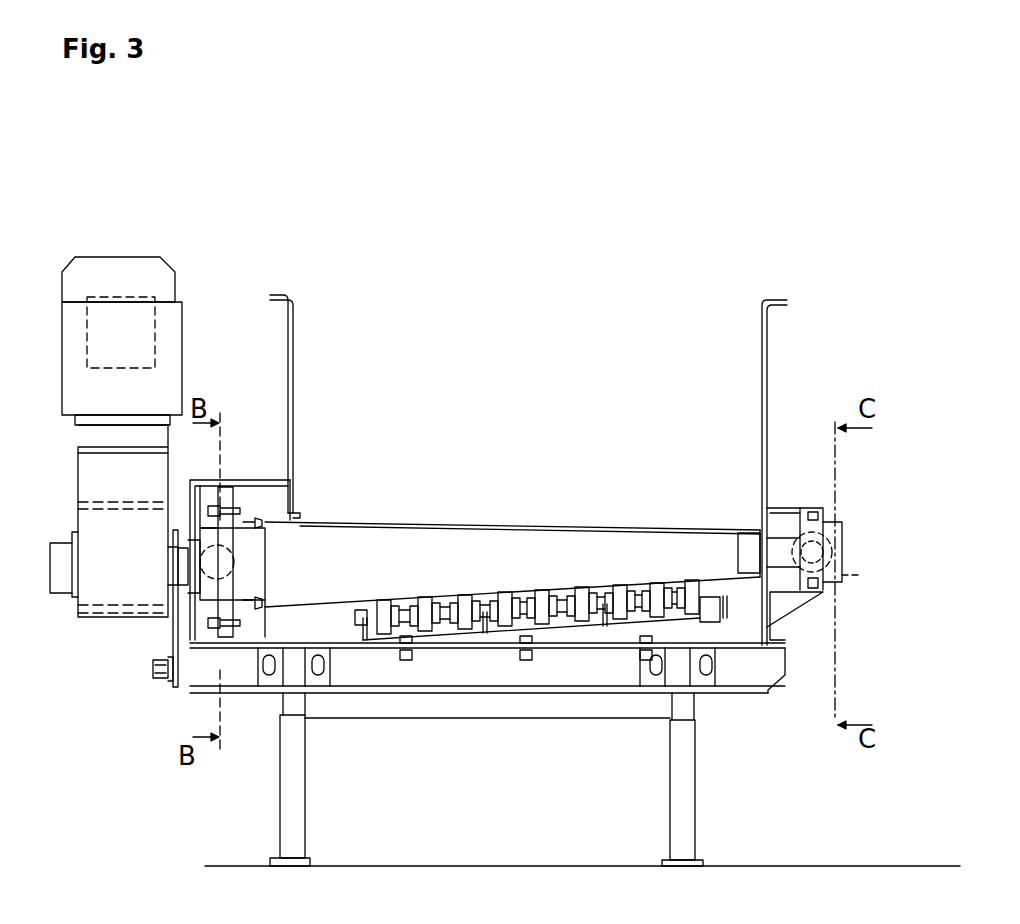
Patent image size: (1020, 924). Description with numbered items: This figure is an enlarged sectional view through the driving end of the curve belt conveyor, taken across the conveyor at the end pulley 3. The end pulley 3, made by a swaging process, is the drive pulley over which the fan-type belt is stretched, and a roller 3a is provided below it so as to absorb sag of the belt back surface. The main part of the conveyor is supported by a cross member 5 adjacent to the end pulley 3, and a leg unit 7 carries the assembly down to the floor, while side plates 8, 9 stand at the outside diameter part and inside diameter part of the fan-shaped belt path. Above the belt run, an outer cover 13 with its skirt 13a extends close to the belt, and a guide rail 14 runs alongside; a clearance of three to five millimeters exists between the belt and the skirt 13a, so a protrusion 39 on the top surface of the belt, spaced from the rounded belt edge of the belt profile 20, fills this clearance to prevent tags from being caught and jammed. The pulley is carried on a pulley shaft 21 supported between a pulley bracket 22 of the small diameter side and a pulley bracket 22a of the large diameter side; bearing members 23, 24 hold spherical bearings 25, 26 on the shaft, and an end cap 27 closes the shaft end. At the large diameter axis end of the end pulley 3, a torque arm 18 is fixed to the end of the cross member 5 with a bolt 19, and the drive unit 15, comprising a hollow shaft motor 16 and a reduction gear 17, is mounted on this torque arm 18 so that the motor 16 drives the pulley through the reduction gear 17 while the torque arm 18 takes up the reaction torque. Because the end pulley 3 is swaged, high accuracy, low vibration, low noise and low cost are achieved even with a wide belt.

The end pulley 3 is at (383, 545).
The roller 3a is at (580, 618).
The cross member 5 is at (402, 676).
The leg unit 7 is at (283, 821).
The side plate 8 is at (187, 500).
The side plate 9 is at (762, 372).
The outer cover 13 is at (275, 487).
The skirt 13a is at (291, 490).
The guide rail 14 is at (288, 347).
The drive unit 15 is at (76, 512).
The motor 16 is at (75, 351).
The reduction gear 17 is at (92, 613).
The torque arm 18 is at (175, 645).
The bolt 19 is at (157, 673).
The belt profile 20 is at (256, 505).
The pulley shaft 21 is at (256, 565).
The pulley bracket 22 is at (793, 508).
The pulley bracket 22a is at (258, 648).
The bearing member 23 is at (200, 531).
The bearing member 24 is at (815, 525).
The spherical bearing 25 is at (200, 565).
The spherical bearing 26 is at (871, 572).
The end cap 27 is at (750, 545).
The protrusion 39 is at (300, 509).